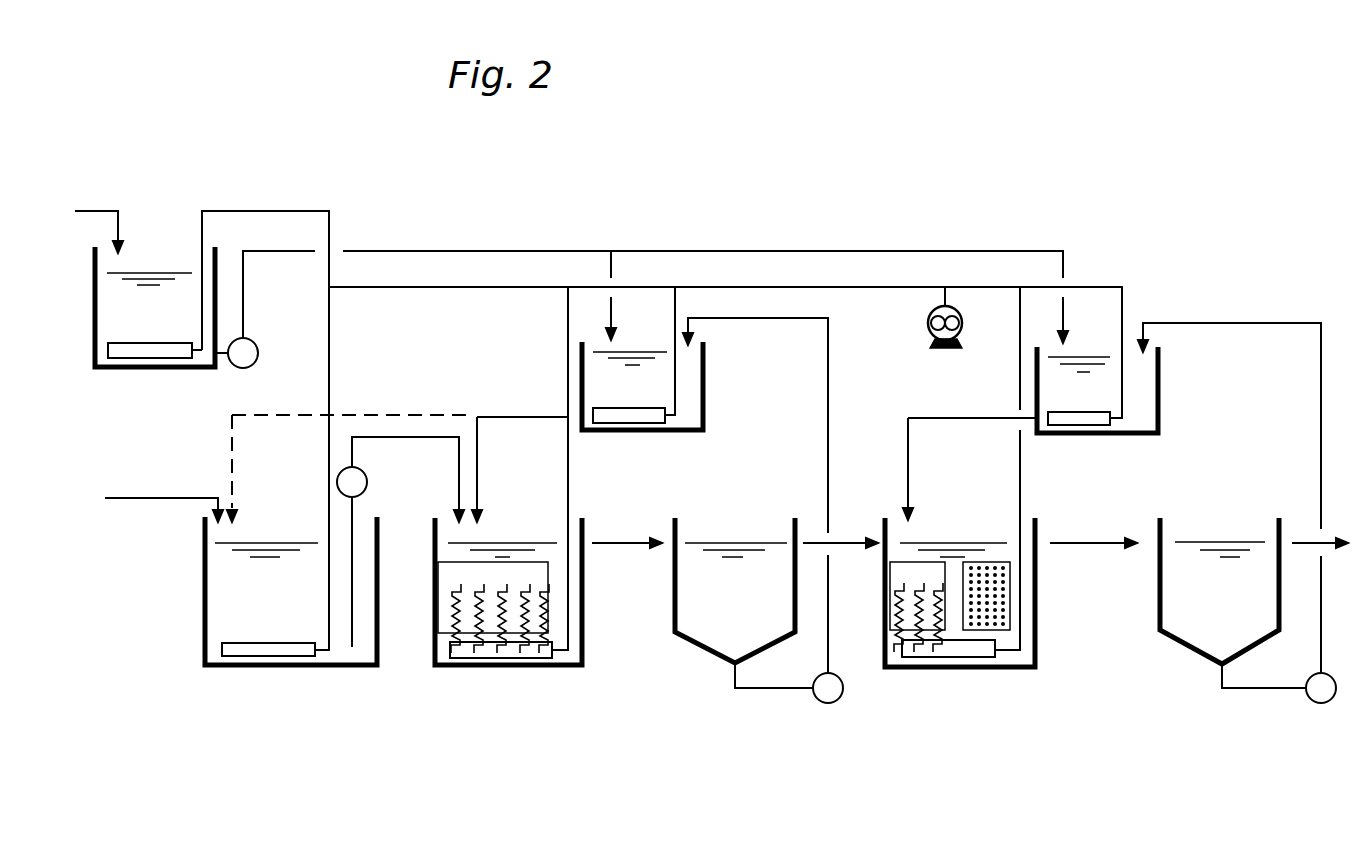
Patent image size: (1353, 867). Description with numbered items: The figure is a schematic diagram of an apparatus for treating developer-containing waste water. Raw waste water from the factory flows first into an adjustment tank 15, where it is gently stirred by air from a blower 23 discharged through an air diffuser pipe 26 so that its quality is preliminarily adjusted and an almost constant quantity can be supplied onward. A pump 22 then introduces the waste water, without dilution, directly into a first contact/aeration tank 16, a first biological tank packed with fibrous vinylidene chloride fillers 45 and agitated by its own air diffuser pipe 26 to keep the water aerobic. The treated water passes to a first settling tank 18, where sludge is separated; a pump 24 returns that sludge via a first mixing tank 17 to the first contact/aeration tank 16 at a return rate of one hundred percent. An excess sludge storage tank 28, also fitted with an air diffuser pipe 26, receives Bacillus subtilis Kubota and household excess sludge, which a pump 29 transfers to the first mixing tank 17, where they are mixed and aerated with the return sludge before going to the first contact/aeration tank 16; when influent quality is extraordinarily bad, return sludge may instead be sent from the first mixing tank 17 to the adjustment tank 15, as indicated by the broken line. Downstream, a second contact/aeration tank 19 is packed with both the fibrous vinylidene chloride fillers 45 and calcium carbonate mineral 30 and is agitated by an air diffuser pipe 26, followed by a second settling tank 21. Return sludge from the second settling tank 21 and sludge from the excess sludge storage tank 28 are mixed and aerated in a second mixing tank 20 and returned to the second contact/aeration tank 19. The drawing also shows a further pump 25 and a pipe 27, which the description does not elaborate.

The adjustment tank 15 is at (205, 592).
The first contact/aeration tank 16 is at (465, 666).
The first mixing tank 17 is at (706, 373).
The first settling tank 18 is at (712, 655).
The second contact/aeration tank 19 is at (915, 668).
The second mixing tank 20 is at (1160, 372).
The second settling tank 21 is at (1186, 645).
The pump 22 is at (367, 482).
The blower 23 is at (963, 322).
The pump 24 is at (817, 700).
The pump 25 is at (1314, 704).
The air diffuser pipe 26 is at (178, 358).
The return pipe 27 is at (1090, 287).
The excess sludge storage tank 28 is at (95, 352).
The pump 29 is at (258, 353).
The calcium carbonate mineral 30 is at (1012, 592).
The fibrous vinylidene chloride fillers 45 is at (445, 590).